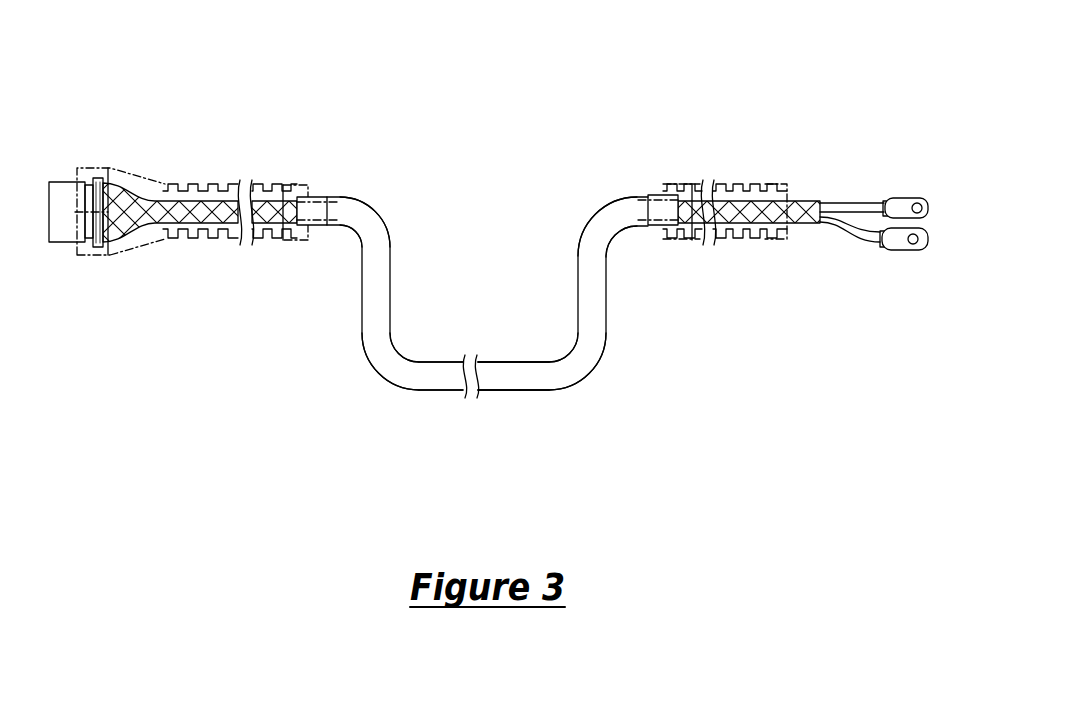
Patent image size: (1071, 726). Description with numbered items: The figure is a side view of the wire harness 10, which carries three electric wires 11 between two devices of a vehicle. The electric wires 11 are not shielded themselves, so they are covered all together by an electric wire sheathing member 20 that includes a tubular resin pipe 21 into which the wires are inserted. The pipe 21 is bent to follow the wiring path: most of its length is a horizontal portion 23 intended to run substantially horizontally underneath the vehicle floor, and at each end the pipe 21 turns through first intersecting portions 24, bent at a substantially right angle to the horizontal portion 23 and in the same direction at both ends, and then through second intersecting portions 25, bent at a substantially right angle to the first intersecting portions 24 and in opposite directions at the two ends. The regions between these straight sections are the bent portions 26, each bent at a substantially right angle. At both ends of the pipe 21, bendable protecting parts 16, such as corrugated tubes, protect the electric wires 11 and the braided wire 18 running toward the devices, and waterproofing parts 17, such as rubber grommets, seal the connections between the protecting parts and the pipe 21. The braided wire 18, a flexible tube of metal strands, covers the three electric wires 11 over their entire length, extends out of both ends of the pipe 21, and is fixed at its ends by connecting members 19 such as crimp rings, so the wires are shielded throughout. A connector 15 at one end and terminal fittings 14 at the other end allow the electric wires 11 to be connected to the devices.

The wire harness 10 is at (466, 88).
The electric wires 11 is at (847, 205).
The terminal fittings 14 is at (903, 202).
The connector 15 is at (63, 190).
The protecting parts 16 is at (213, 237).
The waterproofing parts 17 is at (142, 185).
The braided wire 18 is at (192, 220).
The connecting members 19 is at (100, 192).
The electric wire sheathing member 20 is at (428, 382).
The pipe 21 is at (507, 387).
The horizontal portion 23 is at (522, 387).
The first intersecting portions 24 is at (365, 290).
The second intersecting portions 25 is at (320, 210).
The bent portions 26 is at (377, 222).